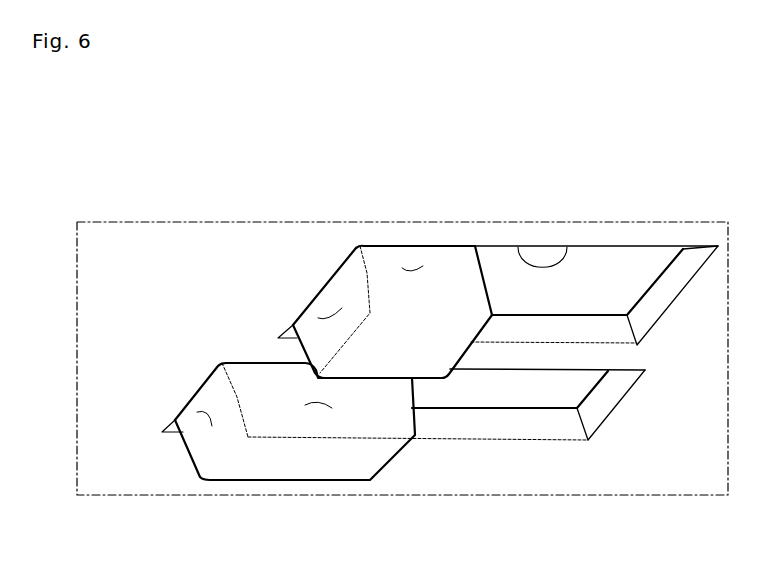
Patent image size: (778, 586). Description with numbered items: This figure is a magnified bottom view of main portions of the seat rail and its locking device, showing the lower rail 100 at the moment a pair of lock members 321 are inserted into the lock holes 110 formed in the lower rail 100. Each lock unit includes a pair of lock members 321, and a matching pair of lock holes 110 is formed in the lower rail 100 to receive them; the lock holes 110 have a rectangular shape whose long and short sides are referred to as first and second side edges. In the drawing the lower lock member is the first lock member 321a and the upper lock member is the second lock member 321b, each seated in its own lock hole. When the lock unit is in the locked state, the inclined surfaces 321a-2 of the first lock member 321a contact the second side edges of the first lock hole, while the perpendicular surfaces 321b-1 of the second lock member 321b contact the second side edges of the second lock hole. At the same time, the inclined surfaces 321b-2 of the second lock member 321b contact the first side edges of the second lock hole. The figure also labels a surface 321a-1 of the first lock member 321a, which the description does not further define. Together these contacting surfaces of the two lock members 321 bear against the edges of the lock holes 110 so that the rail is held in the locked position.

The lower rail 100 is at (593, 232).
The lock holes 110 is at (520, 247).
The lock members 321 is at (343, 97).
The first lock member 321a is at (229, 397).
The second lock member 321b is at (360, 242).
The first tab plate portion 321a-1 is at (313, 407).
The inclined surfaces of the first lock member 321a-2 is at (200, 423).
The perpendicular surfaces of the second lock member 321b-1 is at (328, 312).
The inclined surfaces of the second lock member 321b-2 is at (420, 266).